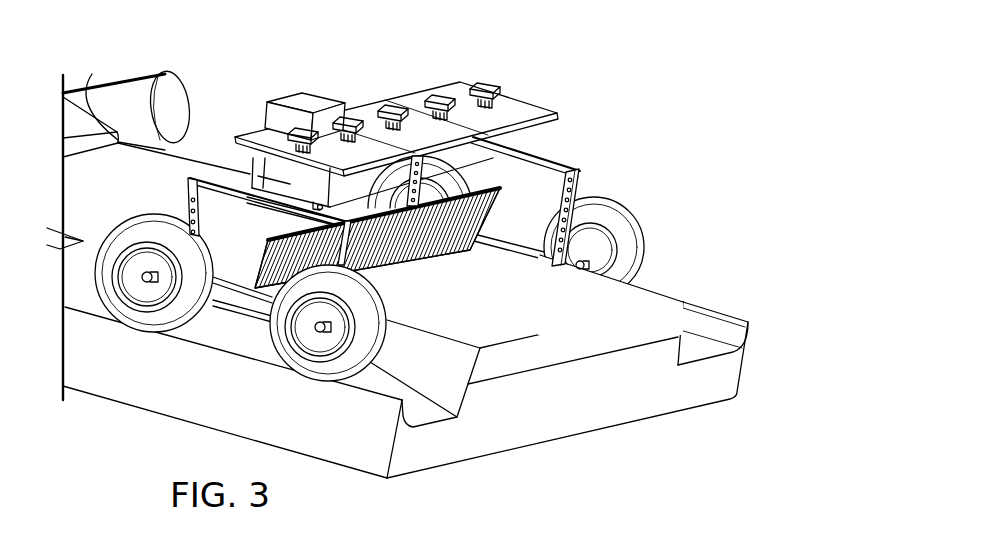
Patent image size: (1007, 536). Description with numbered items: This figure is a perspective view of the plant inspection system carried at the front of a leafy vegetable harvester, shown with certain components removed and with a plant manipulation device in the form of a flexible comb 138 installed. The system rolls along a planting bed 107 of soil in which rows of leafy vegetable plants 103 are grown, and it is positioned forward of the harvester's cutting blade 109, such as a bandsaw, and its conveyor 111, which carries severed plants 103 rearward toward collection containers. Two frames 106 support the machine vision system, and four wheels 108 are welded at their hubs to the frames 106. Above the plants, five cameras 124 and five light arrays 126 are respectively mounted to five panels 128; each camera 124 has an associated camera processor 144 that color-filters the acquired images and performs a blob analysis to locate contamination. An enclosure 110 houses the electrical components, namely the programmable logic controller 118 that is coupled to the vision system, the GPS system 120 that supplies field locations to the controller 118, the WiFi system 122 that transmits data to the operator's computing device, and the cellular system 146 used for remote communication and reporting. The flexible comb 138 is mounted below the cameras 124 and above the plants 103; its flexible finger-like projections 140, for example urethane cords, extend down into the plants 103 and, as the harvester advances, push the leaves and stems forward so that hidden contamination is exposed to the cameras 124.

The leafy vegetable plants 103 is at (637, 328).
The planting bed 107 is at (620, 415).
The cutting blade 109 is at (164, 70).
The conveyor 111 is at (100, 117).
The enclosure 110 is at (409, 201).
The programmable logic controller 118 is at (409, 201).
The GPS system 120 is at (409, 201).
The WiFi system 122 is at (409, 201).
The cellular system 146 is at (315, 50).
The cameras 124 is at (448, 94).
The camera processor 144 is at (474, 84).
The panels 128 is at (507, 97).
The light arrays 126 is at (555, 128).
The flexible comb 138 is at (502, 180).
The frames 106 is at (584, 172).
The finger-like projections 140 is at (491, 190).
The wheels 108 is at (643, 240).